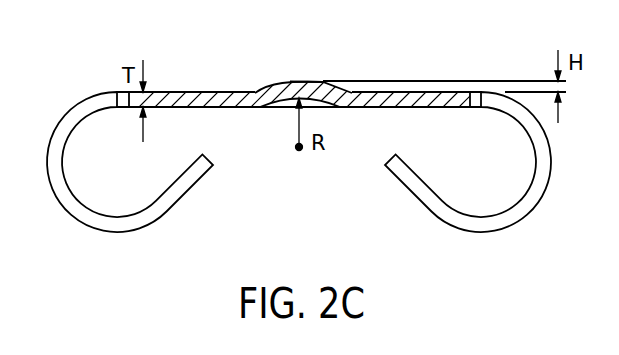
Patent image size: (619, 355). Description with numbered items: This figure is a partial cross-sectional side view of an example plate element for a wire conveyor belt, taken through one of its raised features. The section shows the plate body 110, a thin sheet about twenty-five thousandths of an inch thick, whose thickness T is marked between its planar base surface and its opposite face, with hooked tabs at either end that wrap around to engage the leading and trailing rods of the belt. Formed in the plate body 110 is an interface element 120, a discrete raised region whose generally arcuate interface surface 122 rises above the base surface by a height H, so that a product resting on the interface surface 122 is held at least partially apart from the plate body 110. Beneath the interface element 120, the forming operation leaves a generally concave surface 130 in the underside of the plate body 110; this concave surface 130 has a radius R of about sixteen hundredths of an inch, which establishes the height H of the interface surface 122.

The plate body 110 is at (198, 97).
The interface element 120 is at (265, 89).
The interface surface 122 is at (322, 83).
The concave surface 130 is at (266, 102).